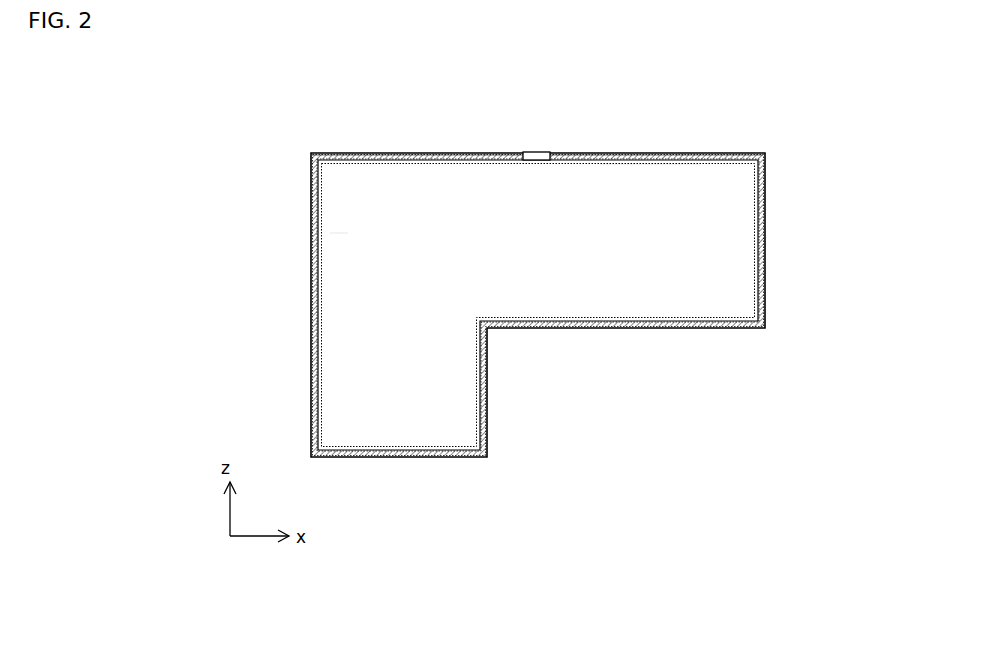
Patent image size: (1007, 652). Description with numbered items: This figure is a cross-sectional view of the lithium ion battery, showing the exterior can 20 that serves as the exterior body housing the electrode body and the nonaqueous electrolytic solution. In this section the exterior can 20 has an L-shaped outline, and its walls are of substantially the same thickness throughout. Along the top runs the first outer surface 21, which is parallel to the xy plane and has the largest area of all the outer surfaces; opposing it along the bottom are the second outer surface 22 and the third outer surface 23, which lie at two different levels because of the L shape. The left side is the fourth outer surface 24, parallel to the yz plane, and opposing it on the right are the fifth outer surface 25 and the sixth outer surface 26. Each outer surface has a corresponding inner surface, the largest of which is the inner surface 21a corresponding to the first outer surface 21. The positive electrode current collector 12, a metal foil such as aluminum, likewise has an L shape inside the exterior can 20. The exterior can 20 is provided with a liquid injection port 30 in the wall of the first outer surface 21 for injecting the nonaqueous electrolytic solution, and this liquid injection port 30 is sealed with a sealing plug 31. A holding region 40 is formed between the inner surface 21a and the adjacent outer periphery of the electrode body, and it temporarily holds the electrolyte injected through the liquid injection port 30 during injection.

The positive electrode current collector 12 is at (348, 233).
The exterior can 20 is at (732, 152).
The first outer surface 21 is at (475, 150).
The inner surface 21a is at (644, 172).
The second outer surface 22 is at (416, 459).
The third outer surface 23 is at (621, 330).
The fourth outer surface 24 is at (310, 323).
The fifth outer surface 25 is at (489, 393).
The sixth outer surface 26 is at (767, 237).
The liquid injection port 30 is at (550, 150).
The sealing plug 31 is at (534, 151).
The holding region 40 is at (368, 165).